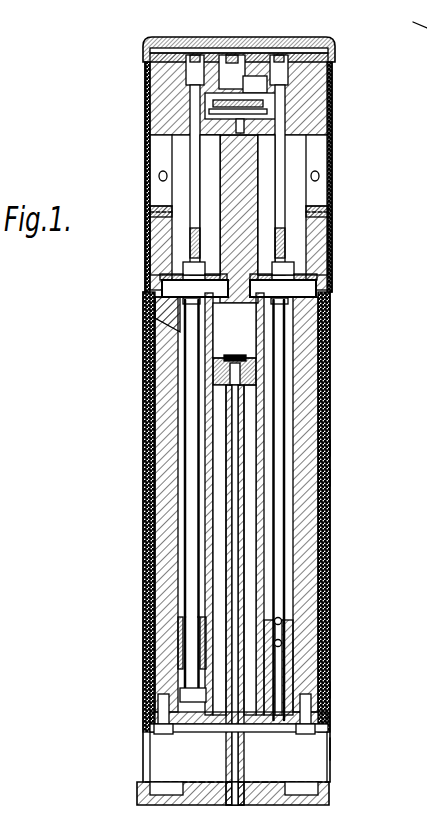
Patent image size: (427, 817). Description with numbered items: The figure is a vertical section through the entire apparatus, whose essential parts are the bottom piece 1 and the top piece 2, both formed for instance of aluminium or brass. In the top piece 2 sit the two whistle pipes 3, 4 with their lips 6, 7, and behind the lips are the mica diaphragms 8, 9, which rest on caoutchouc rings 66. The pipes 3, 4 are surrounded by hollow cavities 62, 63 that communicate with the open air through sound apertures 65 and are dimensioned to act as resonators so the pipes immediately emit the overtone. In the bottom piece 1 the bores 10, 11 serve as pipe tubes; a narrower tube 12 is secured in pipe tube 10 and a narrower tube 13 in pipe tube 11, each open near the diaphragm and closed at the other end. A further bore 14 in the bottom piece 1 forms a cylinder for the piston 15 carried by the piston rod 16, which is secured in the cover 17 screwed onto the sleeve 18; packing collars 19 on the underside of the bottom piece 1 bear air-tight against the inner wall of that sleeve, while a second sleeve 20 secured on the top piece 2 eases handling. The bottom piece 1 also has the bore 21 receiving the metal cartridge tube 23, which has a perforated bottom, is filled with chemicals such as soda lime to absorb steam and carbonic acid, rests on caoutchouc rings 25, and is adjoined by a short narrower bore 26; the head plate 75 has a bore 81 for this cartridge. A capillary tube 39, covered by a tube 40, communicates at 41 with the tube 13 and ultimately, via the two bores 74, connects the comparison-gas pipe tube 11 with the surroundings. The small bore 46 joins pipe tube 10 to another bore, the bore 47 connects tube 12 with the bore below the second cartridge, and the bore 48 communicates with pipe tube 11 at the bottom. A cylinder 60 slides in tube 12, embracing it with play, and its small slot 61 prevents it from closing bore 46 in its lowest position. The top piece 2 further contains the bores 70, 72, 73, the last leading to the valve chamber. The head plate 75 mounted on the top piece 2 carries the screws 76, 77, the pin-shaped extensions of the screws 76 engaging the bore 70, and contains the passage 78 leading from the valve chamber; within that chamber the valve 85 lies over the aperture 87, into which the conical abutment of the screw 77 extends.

The bottom piece 1 is at (170, 443).
The top piece 2 is at (145, 81).
The pipe 3 is at (195, 215).
The pipe 4 is at (283, 215).
The lip 6 is at (165, 285).
The lip 7 is at (310, 262).
The diaphragm 8 is at (170, 318).
The diaphragm 9 is at (300, 300).
The bore 10 is at (182, 474).
The bore 11 is at (330, 506).
The narrower tube 12 is at (192, 529).
The narrower tube 13 is at (277, 529).
The bore 14 is at (222, 560).
The piston 15 is at (215, 382).
The piston rod 16 is at (230, 588).
The cover 17 is at (160, 780).
The sleeve 18 is at (150, 748).
The packing collars 19 is at (326, 740).
The sleeve 20 is at (273, 560).
The bore 21 is at (426, 448).
The metal tube (cartridge) 23 is at (426, 478).
The caoutchouc rings 25 is at (426, 690).
The narrower bore 26 is at (426, 745).
The capillary tube 39 is at (330, 390).
The tube 40 is at (160, 414).
The bore 41 is at (281, 641).
The small bore 46 is at (185, 684).
The bore 47 is at (160, 712).
The bore 48 is at (281, 618).
The cylinder 60 is at (180, 617).
The small slot 61 is at (190, 655).
The hollow space (cavity) 62 is at (195, 242).
The hollow space (cavity) 63 is at (283, 242).
The sound openings (apertures) 65 is at (162, 187).
The caoutchouc rings 66 is at (170, 302).
The bore 70 is at (262, 128).
The bore 72 is at (333, 127).
The bore 73 is at (225, 106).
The bores 74 is at (163, 174).
The head plate 75 is at (268, 55).
The screws 76 is at (190, 55).
The screw 77 is at (226, 55).
The passage 78 is at (280, 68).
The bore 81 is at (408, 15).
The valve 85 is at (250, 78).
The aperture 87 is at (150, 45).